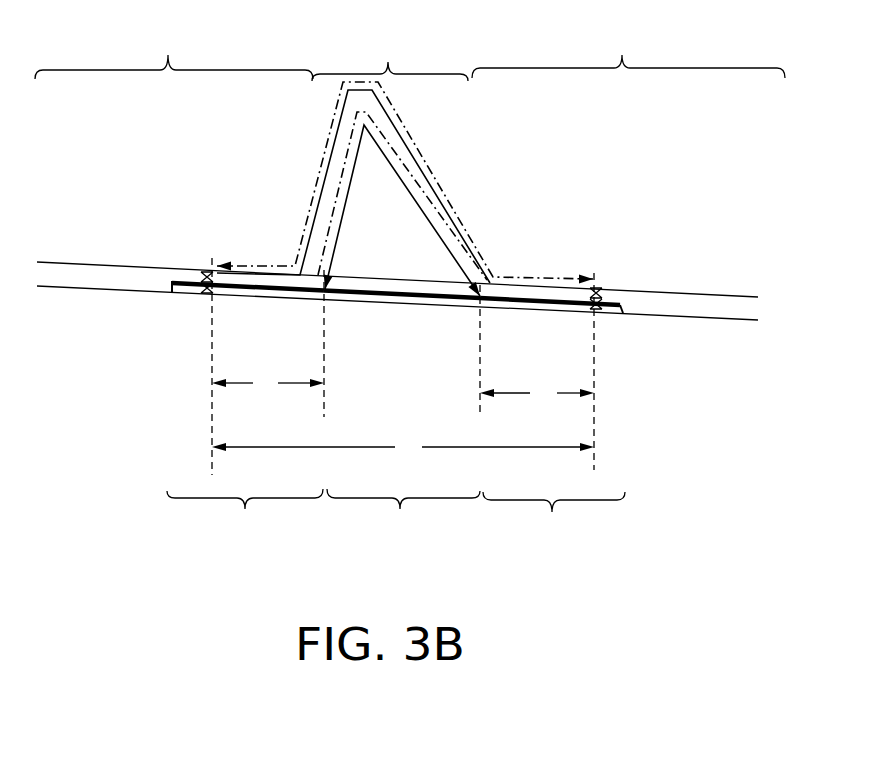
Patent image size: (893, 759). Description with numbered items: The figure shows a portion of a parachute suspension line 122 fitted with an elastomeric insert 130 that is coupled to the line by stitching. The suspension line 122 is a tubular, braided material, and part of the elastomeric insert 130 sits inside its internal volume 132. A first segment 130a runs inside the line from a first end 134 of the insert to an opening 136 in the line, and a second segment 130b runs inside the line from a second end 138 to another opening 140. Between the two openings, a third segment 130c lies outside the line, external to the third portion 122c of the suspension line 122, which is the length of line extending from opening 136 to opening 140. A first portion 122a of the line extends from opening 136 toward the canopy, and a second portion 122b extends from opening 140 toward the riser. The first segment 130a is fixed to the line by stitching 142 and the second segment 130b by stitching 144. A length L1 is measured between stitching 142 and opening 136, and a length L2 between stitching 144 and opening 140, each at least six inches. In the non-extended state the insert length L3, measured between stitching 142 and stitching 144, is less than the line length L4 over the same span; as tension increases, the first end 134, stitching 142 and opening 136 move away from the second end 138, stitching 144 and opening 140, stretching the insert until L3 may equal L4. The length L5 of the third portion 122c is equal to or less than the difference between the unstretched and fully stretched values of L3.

The suspension line 122 is at (707, 293).
The first portion 122a is at (628, 47).
The second portion 122b is at (174, 53).
The third portion 122c is at (390, 52).
The elastomeric insert 130 is at (396, 317).
The first segment 130a is at (552, 423).
The second segment 130b is at (245, 414).
The third segment 130c is at (402, 422).
The internal volume 132 is at (692, 312).
The first end 134 is at (630, 319).
The opening 136 is at (478, 297).
The second end 138 is at (168, 296).
The opening 140 is at (327, 293).
The stitching 142 is at (598, 287).
The stitching 144 is at (204, 272).
The length L1 is at (537, 392).
The length L2 is at (268, 383).
The length L3 is at (403, 448).
The length L4 is at (477, 233).
The length L5 is at (410, 180).